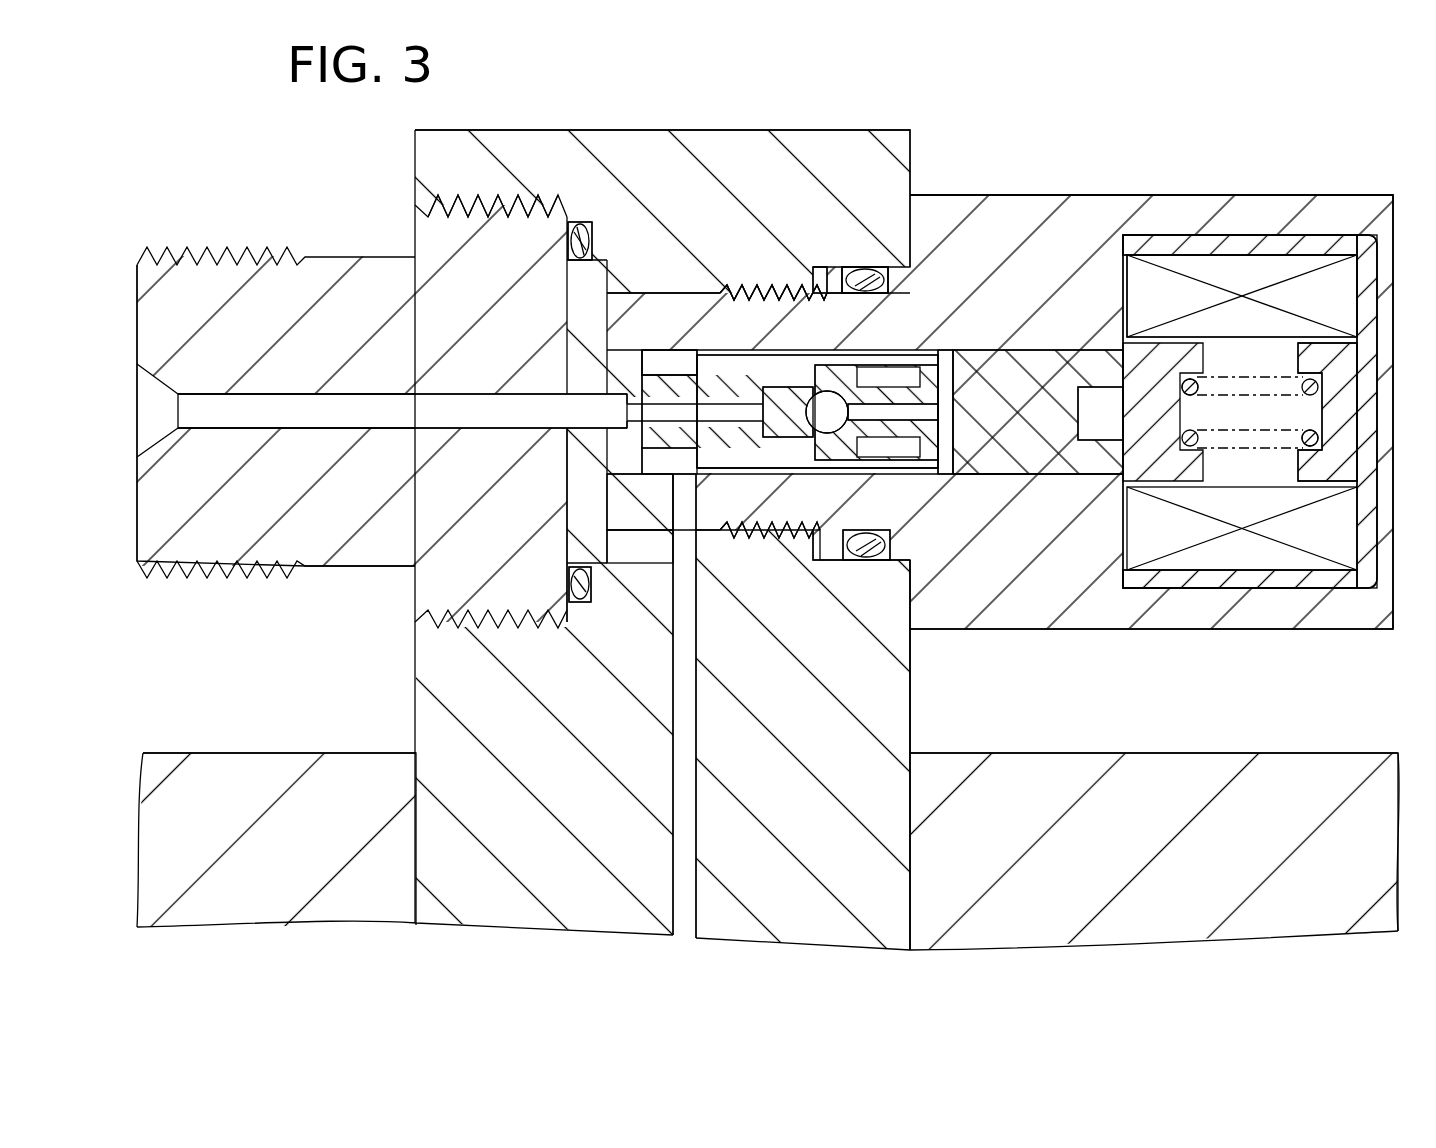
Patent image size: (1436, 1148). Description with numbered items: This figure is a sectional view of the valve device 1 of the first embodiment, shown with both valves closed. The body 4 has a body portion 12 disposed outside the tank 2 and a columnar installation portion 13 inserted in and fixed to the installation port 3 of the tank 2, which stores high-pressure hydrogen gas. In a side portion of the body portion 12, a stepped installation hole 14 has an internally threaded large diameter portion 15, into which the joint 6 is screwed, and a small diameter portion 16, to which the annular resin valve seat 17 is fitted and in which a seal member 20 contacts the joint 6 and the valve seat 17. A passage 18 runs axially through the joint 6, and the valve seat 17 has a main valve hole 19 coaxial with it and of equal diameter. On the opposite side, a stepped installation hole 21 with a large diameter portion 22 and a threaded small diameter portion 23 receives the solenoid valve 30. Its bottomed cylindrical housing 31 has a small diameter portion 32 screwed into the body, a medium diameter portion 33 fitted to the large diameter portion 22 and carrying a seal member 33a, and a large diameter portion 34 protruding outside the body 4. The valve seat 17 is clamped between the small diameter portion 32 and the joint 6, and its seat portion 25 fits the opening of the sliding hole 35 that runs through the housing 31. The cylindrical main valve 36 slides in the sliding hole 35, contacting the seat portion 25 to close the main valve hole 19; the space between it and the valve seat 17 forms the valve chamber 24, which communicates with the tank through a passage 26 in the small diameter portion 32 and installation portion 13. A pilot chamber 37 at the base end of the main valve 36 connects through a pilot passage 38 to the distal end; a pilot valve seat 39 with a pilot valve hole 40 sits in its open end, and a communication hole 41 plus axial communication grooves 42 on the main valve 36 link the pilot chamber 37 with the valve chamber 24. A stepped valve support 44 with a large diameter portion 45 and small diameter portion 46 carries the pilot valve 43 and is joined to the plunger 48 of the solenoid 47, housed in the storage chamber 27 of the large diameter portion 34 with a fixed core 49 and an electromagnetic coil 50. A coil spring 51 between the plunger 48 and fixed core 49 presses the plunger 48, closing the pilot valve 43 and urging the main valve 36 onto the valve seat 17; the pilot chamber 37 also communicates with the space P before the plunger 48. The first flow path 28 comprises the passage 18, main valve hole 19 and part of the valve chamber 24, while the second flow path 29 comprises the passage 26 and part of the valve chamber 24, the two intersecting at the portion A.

The valve device 1 is at (980, 117).
The tank 2 is at (1198, 753).
The installation port 3 is at (418, 765).
The body 4 is at (1000, 658).
The joint 6 is at (330, 257).
The body portion 12 is at (912, 650).
The installation portion 13 is at (912, 793).
The stepped installation hole 14 is at (608, 97).
The large diameter portion 15 is at (545, 200).
The small diameter portion 16 is at (598, 255).
The valve seat 17 is at (566, 533).
The passage 18 is at (386, 430).
The main valve hole 19 is at (551, 420).
The seal member 20 is at (569, 582).
The stepped installation hole 21 is at (790, 97).
The large diameter portion 22 is at (815, 267).
The small diameter portion 23 is at (722, 290).
The valve chamber 24 is at (668, 540).
The seat portion 25 is at (650, 480).
The passage 26 is at (676, 786).
The storage chamber 27 is at (1332, 247).
The first flow path 28 is at (290, 430).
The second flow path 29 is at (676, 890).
The solenoid valve 30 is at (1098, 193).
The housing 31 is at (1200, 193).
The small diameter portion 32 is at (667, 292).
The medium diameter portion 33 is at (893, 264).
The seal member 33a is at (858, 267).
The large diameter portion 34 is at (1275, 193).
The sliding hole 35 is at (1000, 355).
The main valve 36 is at (793, 355).
The pilot chamber 37 is at (903, 450).
The pilot passage 38 is at (695, 440).
The pilot valve seat 39 is at (775, 387).
The pilot valve hole 40 is at (818, 430).
The communication hole 41 is at (863, 497).
The communication grooves 42 is at (905, 350).
The pilot valve 43 is at (845, 365).
The valve support 44 is at (922, 478).
The large diameter portion 45 is at (810, 540).
The small diameter portion 46 is at (952, 395).
The solenoid 47 is at (1188, 126).
The plunger 48 is at (1055, 478).
The fixed core 49 is at (1348, 463).
The electromagnetic coil 50 is at (1305, 574).
The coil spring 51 is at (1213, 377).
The portion A is at (658, 362).
The space P is at (975, 476).